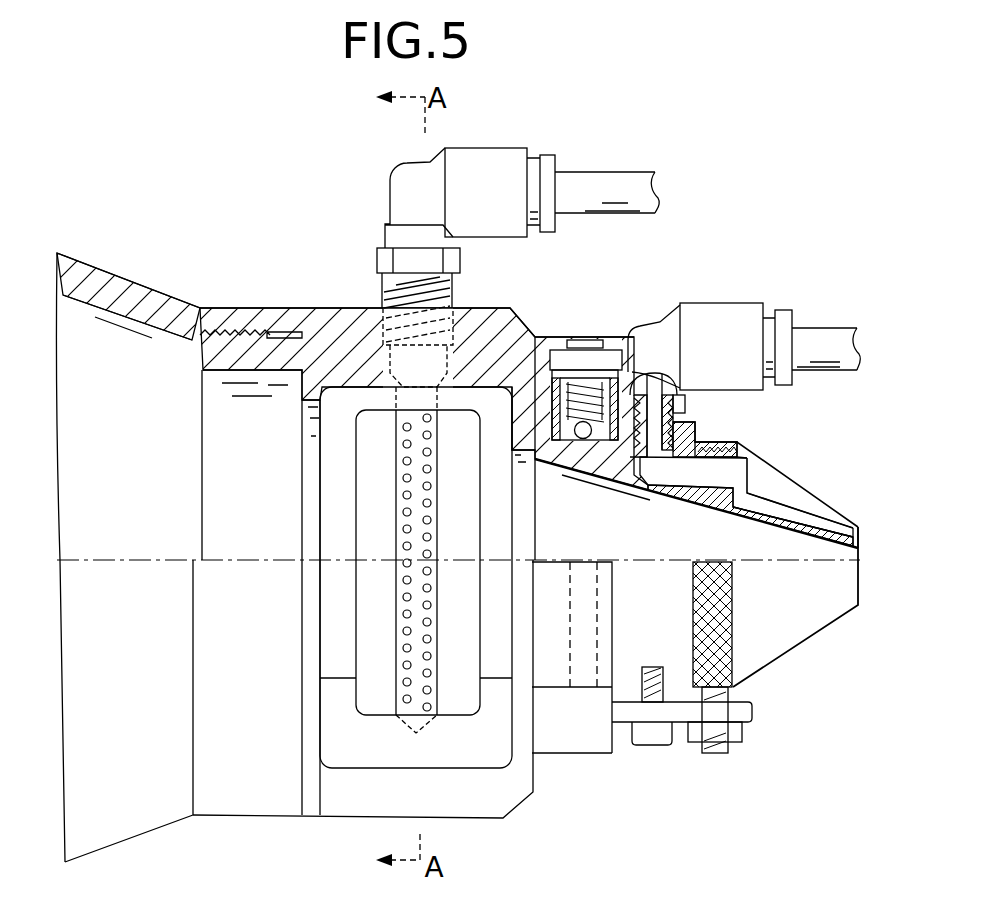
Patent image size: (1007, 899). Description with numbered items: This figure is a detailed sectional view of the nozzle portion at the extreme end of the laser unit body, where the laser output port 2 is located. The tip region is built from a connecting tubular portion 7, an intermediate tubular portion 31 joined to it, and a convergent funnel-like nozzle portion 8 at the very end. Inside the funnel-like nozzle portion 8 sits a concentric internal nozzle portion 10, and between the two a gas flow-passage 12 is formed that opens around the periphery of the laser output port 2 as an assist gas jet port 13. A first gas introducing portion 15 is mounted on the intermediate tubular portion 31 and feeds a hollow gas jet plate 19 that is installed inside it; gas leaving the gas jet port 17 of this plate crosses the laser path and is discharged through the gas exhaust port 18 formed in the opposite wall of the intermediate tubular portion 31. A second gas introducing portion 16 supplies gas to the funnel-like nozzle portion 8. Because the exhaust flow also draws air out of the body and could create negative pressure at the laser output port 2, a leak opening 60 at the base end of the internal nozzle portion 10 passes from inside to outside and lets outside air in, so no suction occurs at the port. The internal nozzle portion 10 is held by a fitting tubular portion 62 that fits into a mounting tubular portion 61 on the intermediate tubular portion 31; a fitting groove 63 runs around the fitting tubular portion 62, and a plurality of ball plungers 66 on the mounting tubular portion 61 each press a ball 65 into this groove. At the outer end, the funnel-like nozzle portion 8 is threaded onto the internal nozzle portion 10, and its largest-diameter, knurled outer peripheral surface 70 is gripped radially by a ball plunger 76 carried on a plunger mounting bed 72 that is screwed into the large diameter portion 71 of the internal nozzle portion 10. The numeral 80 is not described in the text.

The laser output port 2 is at (860, 561).
The connecting tubular portion 7 is at (133, 286).
The funnel-like nozzle portion 8 is at (790, 487).
The internal nozzle portion 10 is at (814, 530).
The gas flow-passage 12 is at (764, 506).
The assist gas jet port 13 is at (859, 540).
The first gas introducing portion 15 is at (478, 148).
The second gas introducing portion 16 is at (727, 303).
The gas jet port 17 is at (430, 690).
The gas exhaust port 18 is at (355, 627).
The hollow gas jet plate 19 is at (393, 490).
The intermediate tubular portion 31 is at (358, 306).
The leak opening 60 is at (543, 453).
The mounting tubular portion 61 is at (568, 398).
The fitting tubular portion 62 is at (603, 422).
The fitting groove 63 is at (571, 622).
The ball 65 is at (552, 428).
The ball plunger 66 is at (584, 350).
The outer peripheral surface 70 is at (723, 623).
The large diameter portion 71 is at (678, 670).
The plunger mounting bed 72 is at (752, 712).
The ball plunger 76 is at (723, 753).
The thread lock 80 is at (709, 447).